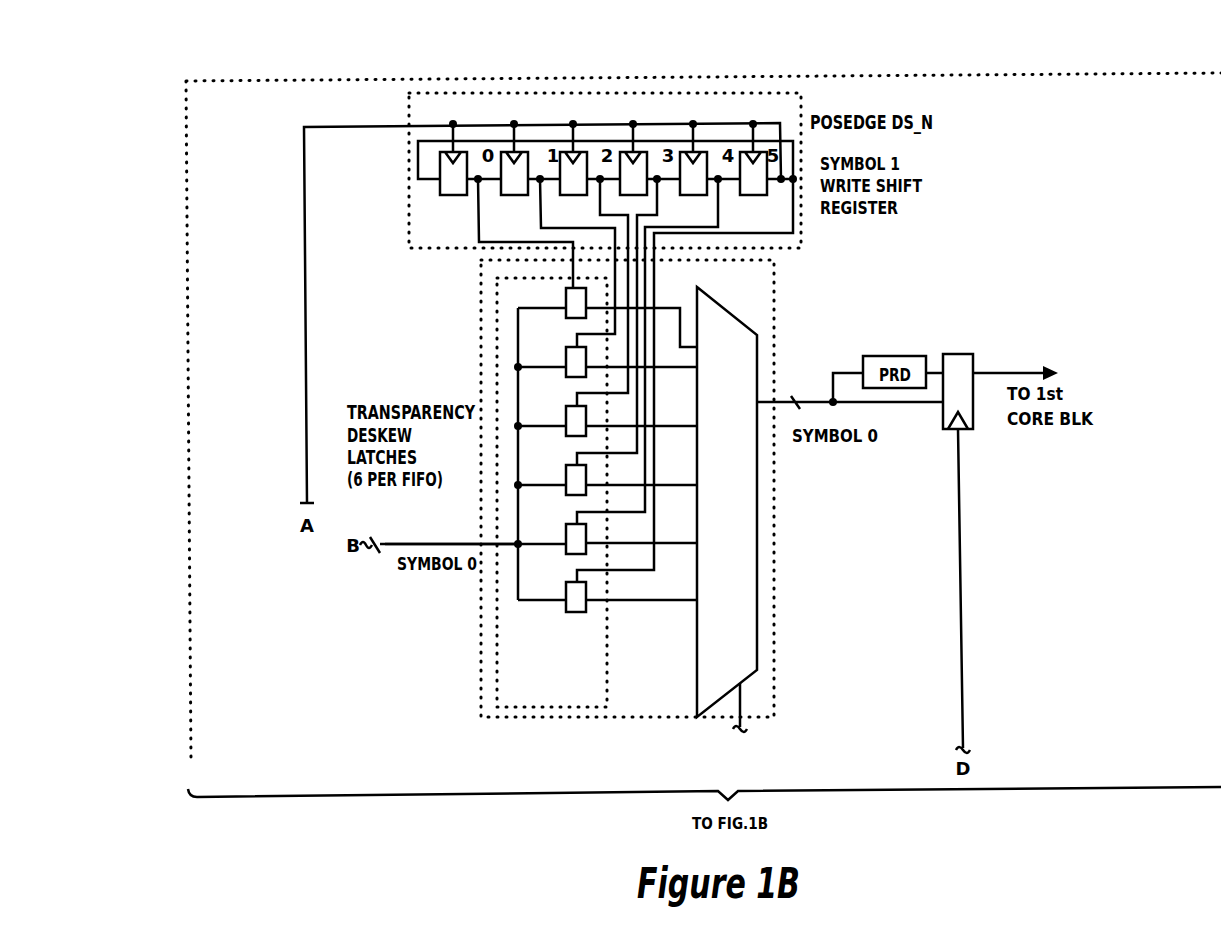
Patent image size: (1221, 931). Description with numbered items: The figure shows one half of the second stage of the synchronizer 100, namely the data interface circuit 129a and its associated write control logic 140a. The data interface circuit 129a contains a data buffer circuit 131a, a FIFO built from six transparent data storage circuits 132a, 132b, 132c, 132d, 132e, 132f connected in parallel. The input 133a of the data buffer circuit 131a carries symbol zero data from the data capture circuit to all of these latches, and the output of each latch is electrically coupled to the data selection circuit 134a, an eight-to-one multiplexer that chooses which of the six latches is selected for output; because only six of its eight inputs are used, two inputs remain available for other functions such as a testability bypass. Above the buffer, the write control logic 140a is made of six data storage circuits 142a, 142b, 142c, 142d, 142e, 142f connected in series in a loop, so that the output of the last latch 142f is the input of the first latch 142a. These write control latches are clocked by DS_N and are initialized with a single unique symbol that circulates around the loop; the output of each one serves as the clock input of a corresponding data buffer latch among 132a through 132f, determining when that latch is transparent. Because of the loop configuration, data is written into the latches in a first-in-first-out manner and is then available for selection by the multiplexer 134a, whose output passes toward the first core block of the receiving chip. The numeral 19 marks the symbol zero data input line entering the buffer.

The synchronizer 100 is at (178, 228).
The write control logic 140a is at (462, 250).
The data storage circuit 142a is at (457, 195).
The data storage circuit 142b is at (518, 195).
The data storage circuit 142c is at (577, 195).
The data storage circuit 142d is at (640, 190).
The data storage circuit 142e is at (702, 195).
The data storage circuit 142f is at (765, 195).
The data interface circuit 129a is at (459, 733).
The data buffer circuit 131a is at (595, 707).
The data storage circuit 132a is at (571, 318).
The data storage circuit 132b is at (571, 377).
The data storage circuit 132c is at (571, 436).
The data storage circuit 132d is at (571, 495).
The data storage circuit 132e is at (571, 554).
The data storage circuit 132f is at (571, 612).
The input 133a is at (415, 544).
The data selection circuit 134a is at (751, 470).
The symbol 0 data input 19 is at (370, 533).